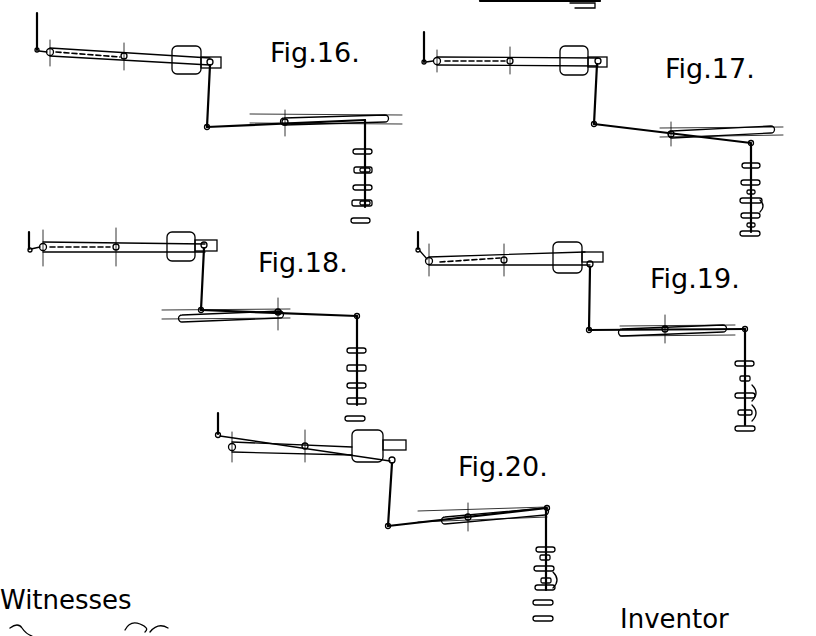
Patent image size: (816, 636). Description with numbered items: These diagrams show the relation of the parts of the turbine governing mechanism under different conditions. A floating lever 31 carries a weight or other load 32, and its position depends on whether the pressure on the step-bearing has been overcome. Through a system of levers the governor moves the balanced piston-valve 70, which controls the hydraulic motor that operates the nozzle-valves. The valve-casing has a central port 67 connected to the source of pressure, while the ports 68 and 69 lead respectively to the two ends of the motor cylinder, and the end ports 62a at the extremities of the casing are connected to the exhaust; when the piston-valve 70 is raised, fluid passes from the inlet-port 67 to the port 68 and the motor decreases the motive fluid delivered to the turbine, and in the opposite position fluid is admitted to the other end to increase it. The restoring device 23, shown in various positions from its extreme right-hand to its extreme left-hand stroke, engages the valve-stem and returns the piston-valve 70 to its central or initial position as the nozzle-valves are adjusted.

In FIG. 16, the floating lever 31 is at (86, 46).
In FIG. 17, the floating lever 31 is at (480, 57).
In FIG. 18, the floating lever 31 is at (137, 240).
In FIG. 19, the floating lever 31 is at (456, 267).
In FIG. 20, the floating lever 31 is at (258, 453).
In FIG. 16, the weight or other load 32 is at (188, 48).
In FIG. 17, the weight or other load 32 is at (577, 50).
In FIG. 18, the weight or other load 32 is at (185, 232).
In FIG. 19, the weight or other load 32 is at (568, 242).
In FIG. 20, the weight or other load 32 is at (383, 430).
In FIG. 16, the restoring-cam 23 is at (378, 113).
In FIG. 17, the restoring-cam 23 is at (740, 130).
In FIG. 18, the restoring-cam 23 is at (188, 324).
In FIG. 19, the restoring-cam 23 is at (718, 328).
In FIG. 20, the restoring-cam 23 is at (493, 519).
In FIG. 16, the washer 62a is at (351, 221).
In FIG. 17, the washer 62a is at (755, 237).
In FIG. 19, the washer 62a is at (748, 361).
In FIG. 20, the washer 62a is at (554, 550).
In FIG. 16, the central port 67 is at (352, 188).
In FIG. 17, the central port 67 is at (742, 215).
In FIG. 19, the central port 67 is at (733, 400).
In FIG. 20, the central port 67 is at (535, 587).
In FIG. 16, the port 68 is at (353, 170).
In FIG. 19, the port 68 is at (738, 378).
In FIG. 20, the port 68 is at (534, 569).
In FIG. 16, the port 69 is at (351, 203).
In FIG. 17, the port 69 is at (745, 224).
In FIG. 19, the port 69 is at (731, 418).
In FIG. 16, the balanced piston-valve 70 is at (368, 165).
In FIG. 17, the balanced piston-valve 70 is at (746, 192).
In FIG. 18, the balanced piston-valve 70 is at (362, 368).
In FIG. 19, the balanced piston-valve 70 is at (734, 390).
In FIG. 20, the balanced piston-valve 70 is at (552, 558).